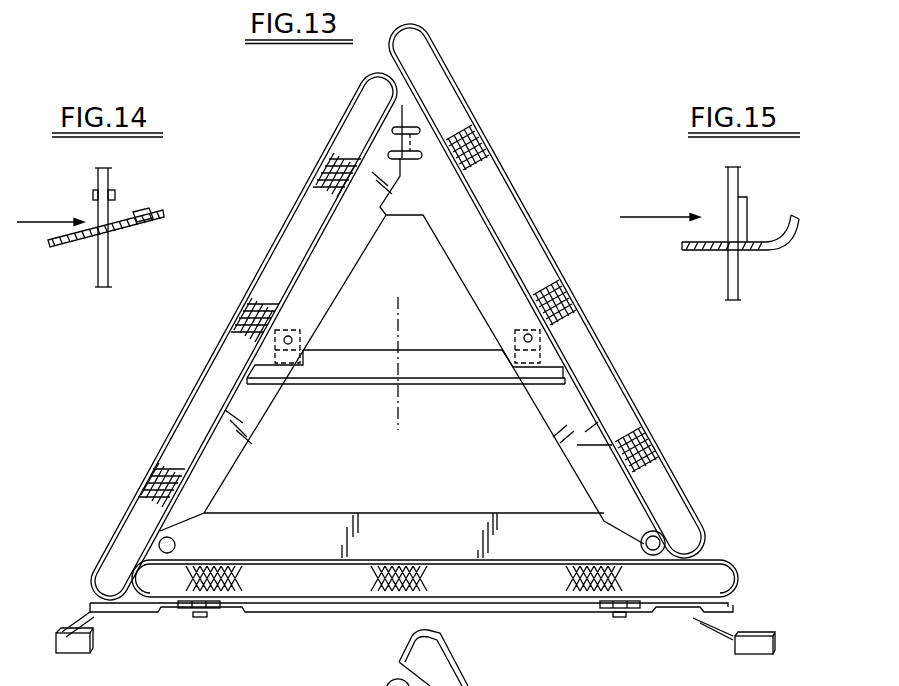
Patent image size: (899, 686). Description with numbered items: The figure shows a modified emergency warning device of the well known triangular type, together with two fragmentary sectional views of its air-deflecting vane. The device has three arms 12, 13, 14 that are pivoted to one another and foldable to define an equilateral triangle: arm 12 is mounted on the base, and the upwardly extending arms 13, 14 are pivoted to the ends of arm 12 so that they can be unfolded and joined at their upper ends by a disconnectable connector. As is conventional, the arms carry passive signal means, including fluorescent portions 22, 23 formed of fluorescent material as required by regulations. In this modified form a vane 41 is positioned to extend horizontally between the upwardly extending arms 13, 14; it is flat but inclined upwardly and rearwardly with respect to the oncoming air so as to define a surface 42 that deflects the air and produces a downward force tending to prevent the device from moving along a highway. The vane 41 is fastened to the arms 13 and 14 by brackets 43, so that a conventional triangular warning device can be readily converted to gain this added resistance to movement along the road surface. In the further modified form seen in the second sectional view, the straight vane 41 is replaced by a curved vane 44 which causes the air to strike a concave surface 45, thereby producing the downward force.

In FIG. 13, the arm 12 is at (331, 584).
In FIG. 13, the arm 13 is at (207, 387).
In FIG. 14, the arm 13 is at (122, 273).
In FIG. 15, the arm 13 is at (719, 283).
In FIG. 13, the arm 14 is at (636, 426).
In FIG. 13, the fluorescent portion 22 is at (380, 158).
In FIG. 13, the fluorescent portion 23 is at (428, 182).
In FIG. 13, the vane 41 is at (353, 356).
In FIG. 14, the vane 41 is at (67, 248).
In FIG. 14, the surface 42 is at (88, 222).
In FIG. 14, the bracket 43 is at (115, 206).
In FIG. 15, the curved vane 44 is at (763, 244).
In FIG. 15, the concave surface 45 is at (775, 231).